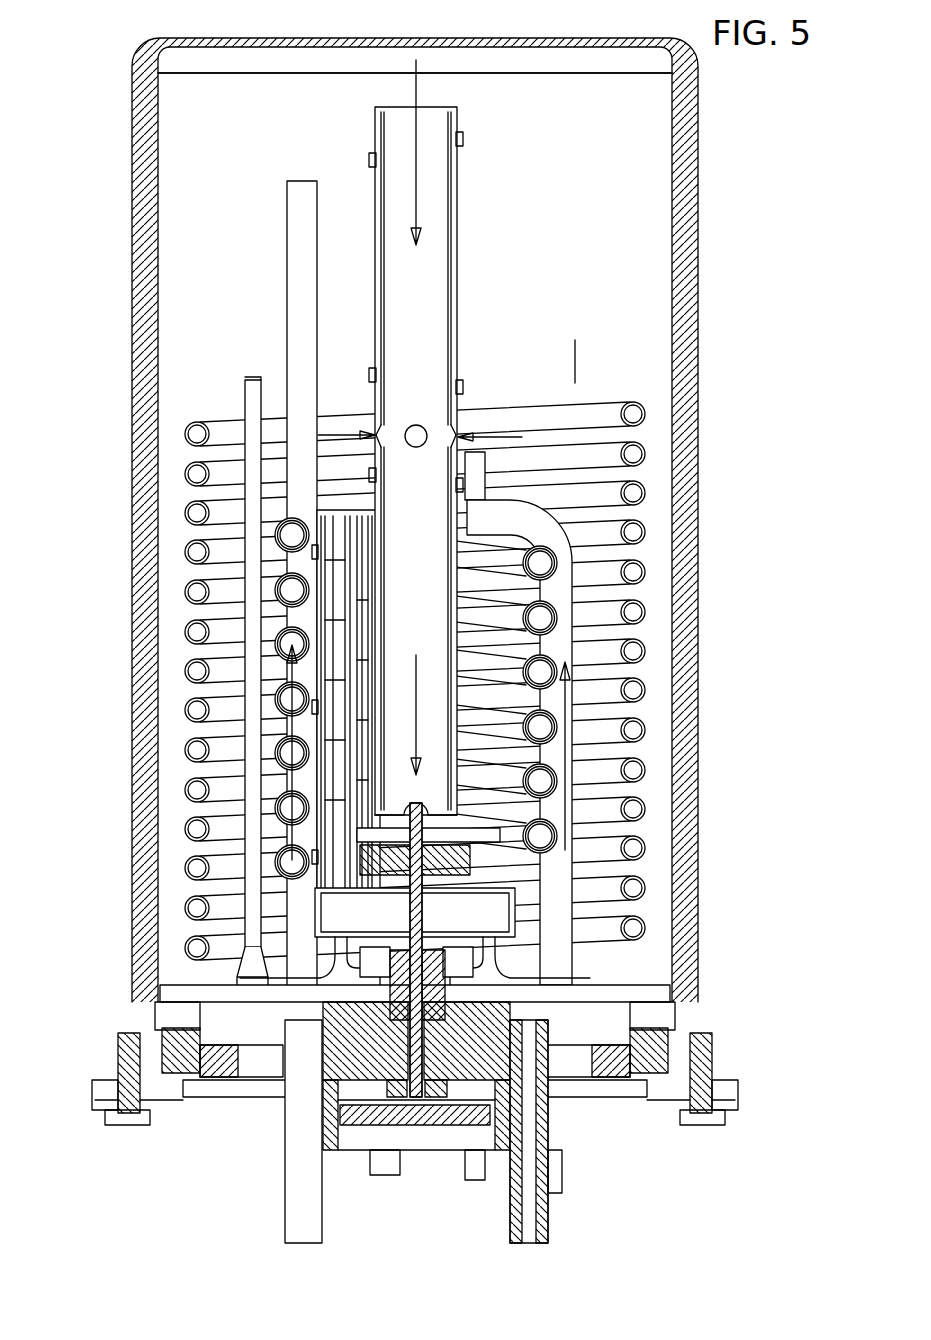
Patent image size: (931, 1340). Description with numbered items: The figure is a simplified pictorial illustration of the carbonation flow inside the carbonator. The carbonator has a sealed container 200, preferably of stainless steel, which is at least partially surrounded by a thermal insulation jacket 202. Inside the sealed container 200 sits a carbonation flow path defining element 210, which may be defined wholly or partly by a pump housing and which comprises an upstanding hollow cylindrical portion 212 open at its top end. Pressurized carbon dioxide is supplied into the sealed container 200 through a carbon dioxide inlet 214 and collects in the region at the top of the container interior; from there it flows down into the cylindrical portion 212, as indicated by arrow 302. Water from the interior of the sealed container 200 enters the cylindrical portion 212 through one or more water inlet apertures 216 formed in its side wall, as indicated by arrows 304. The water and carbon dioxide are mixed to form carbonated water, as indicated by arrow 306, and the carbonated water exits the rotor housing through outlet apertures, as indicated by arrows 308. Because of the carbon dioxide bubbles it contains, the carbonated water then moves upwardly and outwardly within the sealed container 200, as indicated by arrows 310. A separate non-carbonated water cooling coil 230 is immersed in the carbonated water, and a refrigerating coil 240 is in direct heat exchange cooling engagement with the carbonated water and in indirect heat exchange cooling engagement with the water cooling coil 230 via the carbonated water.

The sealed container 200 is at (155, 598).
The thermal insulation jacket 202 is at (140, 356).
The carbonation flow path defining element 210 is at (480, 180).
The upstanding hollow cylindrical portion 212 is at (395, 228).
The carbon dioxide inlet 214 is at (297, 243).
The water inlet apertures 216 is at (452, 433).
The non-carbonated water cooling coil 230 is at (207, 632).
The refrigerating coil 240 is at (503, 788).
The arrow 302 is at (417, 92).
The arrows 304 is at (316, 434).
The arrow 306 is at (413, 683).
The arrows 308 is at (400, 828).
The arrows 310 is at (290, 772).